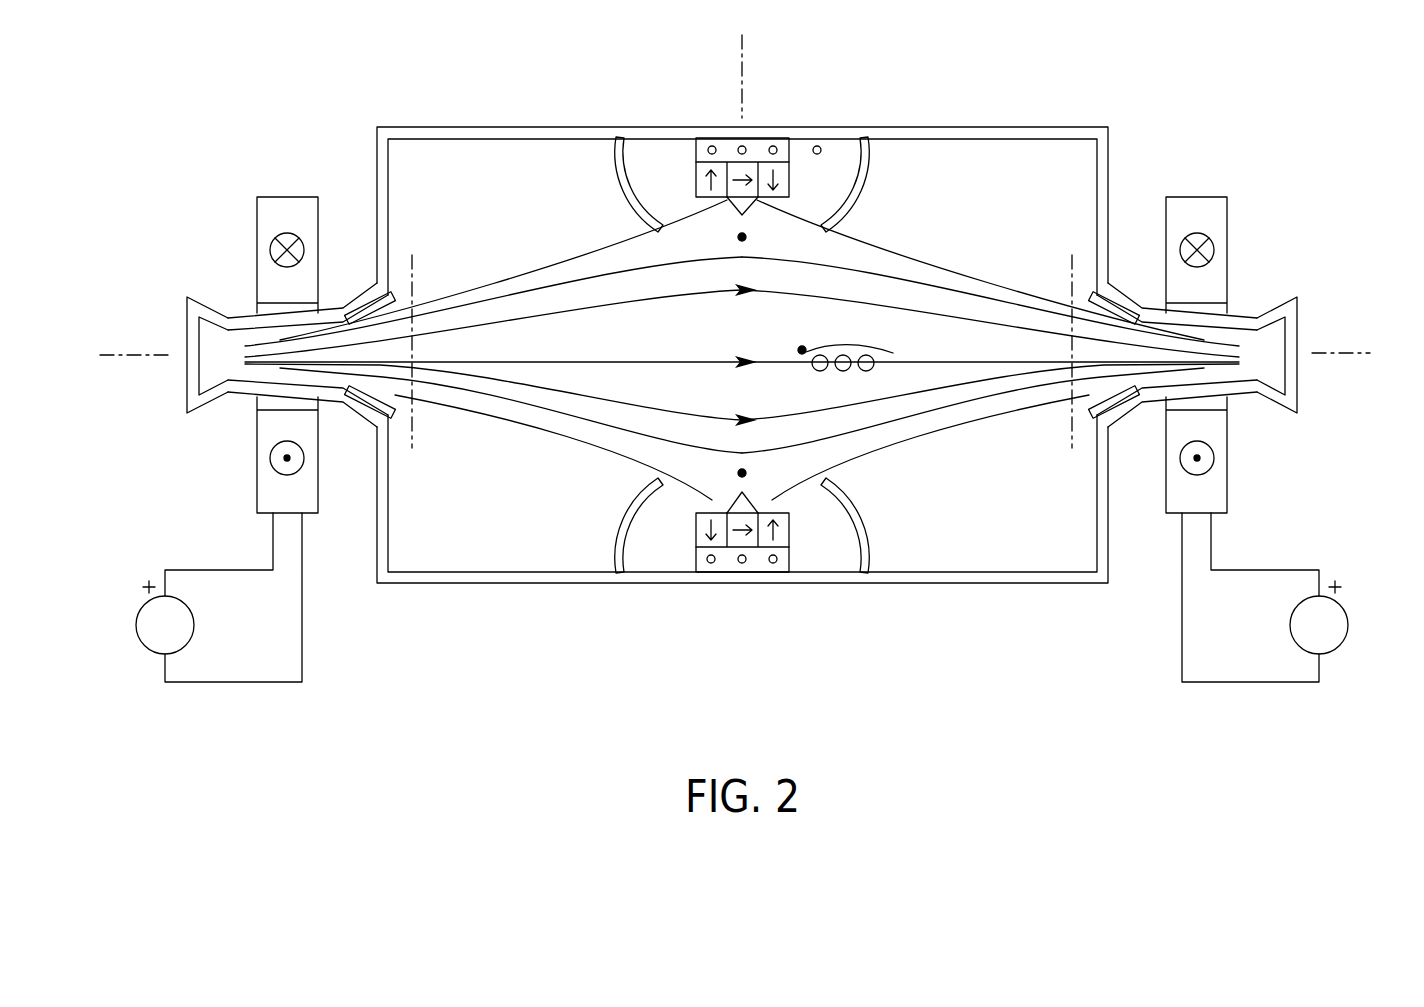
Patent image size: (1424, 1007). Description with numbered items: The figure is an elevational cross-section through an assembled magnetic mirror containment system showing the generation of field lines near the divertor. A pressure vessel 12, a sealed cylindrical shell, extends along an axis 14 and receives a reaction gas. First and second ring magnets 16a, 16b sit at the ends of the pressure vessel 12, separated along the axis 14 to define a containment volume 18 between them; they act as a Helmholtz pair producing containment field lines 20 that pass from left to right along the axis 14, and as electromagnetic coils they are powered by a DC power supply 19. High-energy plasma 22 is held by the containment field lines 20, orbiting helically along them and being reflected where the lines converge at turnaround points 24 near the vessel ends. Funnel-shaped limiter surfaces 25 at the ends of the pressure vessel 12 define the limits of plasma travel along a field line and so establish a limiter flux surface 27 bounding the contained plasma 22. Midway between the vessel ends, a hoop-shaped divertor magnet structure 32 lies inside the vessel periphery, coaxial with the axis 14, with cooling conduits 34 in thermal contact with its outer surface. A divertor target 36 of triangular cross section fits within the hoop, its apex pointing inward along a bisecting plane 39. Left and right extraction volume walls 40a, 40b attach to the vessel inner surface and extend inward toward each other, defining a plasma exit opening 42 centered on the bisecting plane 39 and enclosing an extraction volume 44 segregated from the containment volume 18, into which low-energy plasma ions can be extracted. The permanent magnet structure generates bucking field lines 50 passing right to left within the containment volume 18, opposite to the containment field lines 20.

The pressure vessel 12 is at (500, 127).
The axis 14 is at (1362, 347).
The first ring magnet 16a is at (287, 197).
The second ring magnet 16b is at (1197, 197).
The containment volume 18 is at (1034, 209).
The DC power supply 19 is at (142, 603).
The containment field lines 20 is at (565, 318).
The high-energy plasma 22 is at (800, 349).
The turnaround points 24 is at (413, 425).
The limiter surfaces 25 is at (365, 303).
The limiter flux surface 27 is at (470, 292).
The divertor magnet structure 32 is at (683, 168).
The cooling conduits 34 is at (742, 146).
The divertor target 36 is at (658, 222).
The bisecting plane 39 is at (742, 72).
The left extraction volume wall 40a is at (622, 163).
The right extraction volume wall 40b is at (870, 172).
The plasma exit opening 42 is at (708, 238).
The extraction volume 44 is at (822, 165).
The bucking field lines 50 is at (742, 237).